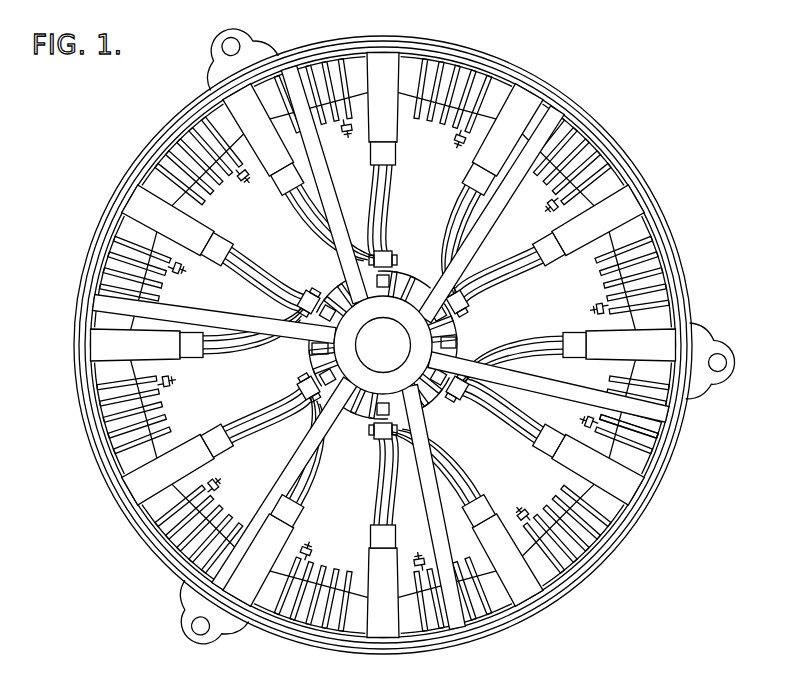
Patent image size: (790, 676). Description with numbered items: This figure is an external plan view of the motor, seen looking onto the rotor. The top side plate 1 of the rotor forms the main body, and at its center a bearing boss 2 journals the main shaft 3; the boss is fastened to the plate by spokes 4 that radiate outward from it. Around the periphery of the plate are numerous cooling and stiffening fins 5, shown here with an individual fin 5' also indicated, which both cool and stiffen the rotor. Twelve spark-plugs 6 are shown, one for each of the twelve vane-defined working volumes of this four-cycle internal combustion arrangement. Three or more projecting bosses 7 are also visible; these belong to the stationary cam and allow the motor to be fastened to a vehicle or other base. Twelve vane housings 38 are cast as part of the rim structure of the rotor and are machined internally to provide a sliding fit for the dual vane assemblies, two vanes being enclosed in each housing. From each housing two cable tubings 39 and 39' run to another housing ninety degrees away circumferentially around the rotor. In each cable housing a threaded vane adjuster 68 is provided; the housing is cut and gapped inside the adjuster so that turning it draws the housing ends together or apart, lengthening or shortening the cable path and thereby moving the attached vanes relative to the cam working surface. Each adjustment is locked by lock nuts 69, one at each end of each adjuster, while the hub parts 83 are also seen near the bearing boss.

The top side plate 1 is at (490, 600).
The bearing boss 2 is at (383, 345).
The main shaft 3 is at (383, 345).
The spokes 4 is at (381, 348).
The cooling and stiffening fins 5 is at (383, 345).
The resilient finger 5' is at (625, 401).
The spark-plugs 6 is at (382, 344).
The projecting bosses 7 is at (447, 337).
The vane housings 38 is at (383, 345).
The cable tubing 39 is at (383, 345).
The cable tubing 39' is at (383, 348).
The vane adjuster 68 is at (383, 344).
The lock nuts 69 is at (383, 346).
The hub ring segment 83 is at (383, 345).